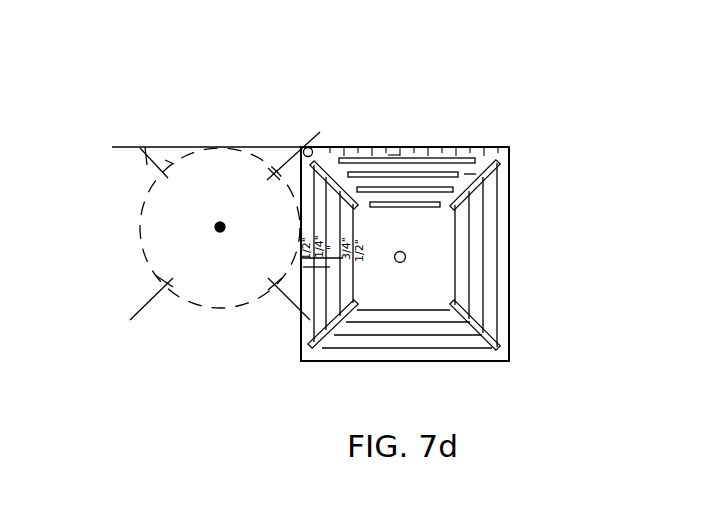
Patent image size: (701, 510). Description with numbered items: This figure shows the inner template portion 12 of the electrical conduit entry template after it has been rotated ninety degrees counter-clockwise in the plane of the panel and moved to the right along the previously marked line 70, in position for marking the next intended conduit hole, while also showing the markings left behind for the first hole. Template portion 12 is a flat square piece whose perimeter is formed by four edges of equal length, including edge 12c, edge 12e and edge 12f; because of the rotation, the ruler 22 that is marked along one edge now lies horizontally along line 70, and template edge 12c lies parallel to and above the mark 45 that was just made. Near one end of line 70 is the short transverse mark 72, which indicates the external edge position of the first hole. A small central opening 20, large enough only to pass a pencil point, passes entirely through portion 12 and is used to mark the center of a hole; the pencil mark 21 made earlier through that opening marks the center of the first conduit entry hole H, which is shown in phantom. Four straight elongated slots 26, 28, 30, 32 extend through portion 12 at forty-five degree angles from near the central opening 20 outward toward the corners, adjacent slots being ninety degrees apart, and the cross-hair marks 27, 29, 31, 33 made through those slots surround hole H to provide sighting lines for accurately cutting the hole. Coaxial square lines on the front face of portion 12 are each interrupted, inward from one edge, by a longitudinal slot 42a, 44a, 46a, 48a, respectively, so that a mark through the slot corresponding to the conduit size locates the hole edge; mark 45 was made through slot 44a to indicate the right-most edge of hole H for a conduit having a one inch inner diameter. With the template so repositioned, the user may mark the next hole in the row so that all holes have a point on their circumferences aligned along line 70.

The inner template portion 12 is at (567, 222).
The top edge 12c is at (300, 335).
The bottom edge 12e is at (510, 268).
The left edge 12f is at (465, 362).
The central opening 20 is at (396, 252).
The pencil mark 21 is at (215, 227).
The ruler 22 is at (470, 140).
The elongated slot 26 is at (313, 155).
The mark 27 is at (290, 165).
The elongated slot 28 is at (497, 163).
The mark 29 is at (287, 296).
The elongated slot 30 is at (490, 340).
The mark 31 is at (140, 308).
The elongated slot 32 is at (318, 338).
The mark 33 is at (158, 163).
The longitudinal slot 42a is at (347, 158).
The longitudinal slot 44a is at (377, 172).
The mark 45 is at (300, 214).
The longitudinal slot 46a is at (402, 187).
The longitudinal slot 48a is at (410, 208).
The line 70 is at (122, 147).
The short mark 72 is at (145, 147).
The conduit entry hole H is at (140, 243).